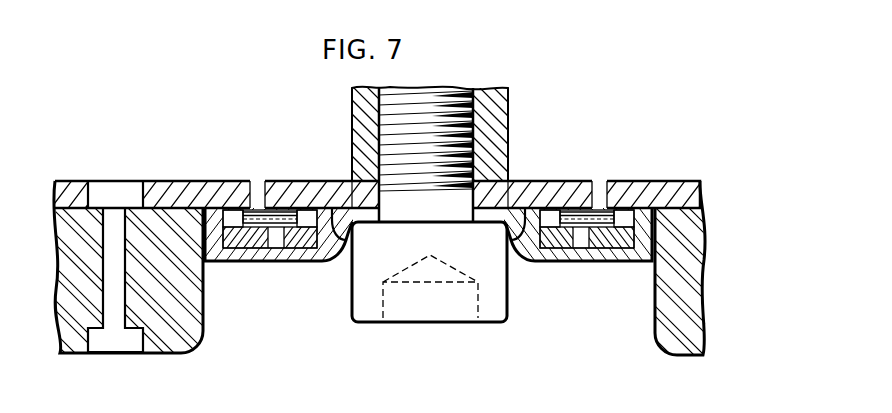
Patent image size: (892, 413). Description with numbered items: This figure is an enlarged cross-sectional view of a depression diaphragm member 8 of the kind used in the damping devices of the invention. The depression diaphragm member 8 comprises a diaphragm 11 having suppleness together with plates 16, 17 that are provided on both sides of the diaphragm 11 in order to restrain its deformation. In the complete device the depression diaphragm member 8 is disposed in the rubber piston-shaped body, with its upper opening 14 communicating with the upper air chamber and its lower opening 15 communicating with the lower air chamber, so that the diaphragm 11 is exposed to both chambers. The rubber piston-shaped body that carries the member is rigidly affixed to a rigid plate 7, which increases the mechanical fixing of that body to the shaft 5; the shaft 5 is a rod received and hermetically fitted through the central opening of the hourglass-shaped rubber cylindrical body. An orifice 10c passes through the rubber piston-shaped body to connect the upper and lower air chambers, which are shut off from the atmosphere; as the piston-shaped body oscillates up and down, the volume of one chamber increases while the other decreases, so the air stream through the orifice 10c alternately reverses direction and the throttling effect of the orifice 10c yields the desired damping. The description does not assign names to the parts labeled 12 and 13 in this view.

The shaft 5 is at (492, 122).
The rigid plate 7 is at (173, 190).
The depression diaphragm member 8 is at (230, 262).
The orifice 10c is at (112, 295).
The diaphragm 11 is at (291, 206).
The insulating block 12 is at (248, 203).
The support block 13 is at (257, 262).
The upper opening 14 is at (261, 185).
The lower opening 15 is at (278, 262).
The plate 16 is at (197, 190).
The plate 17 is at (306, 262).